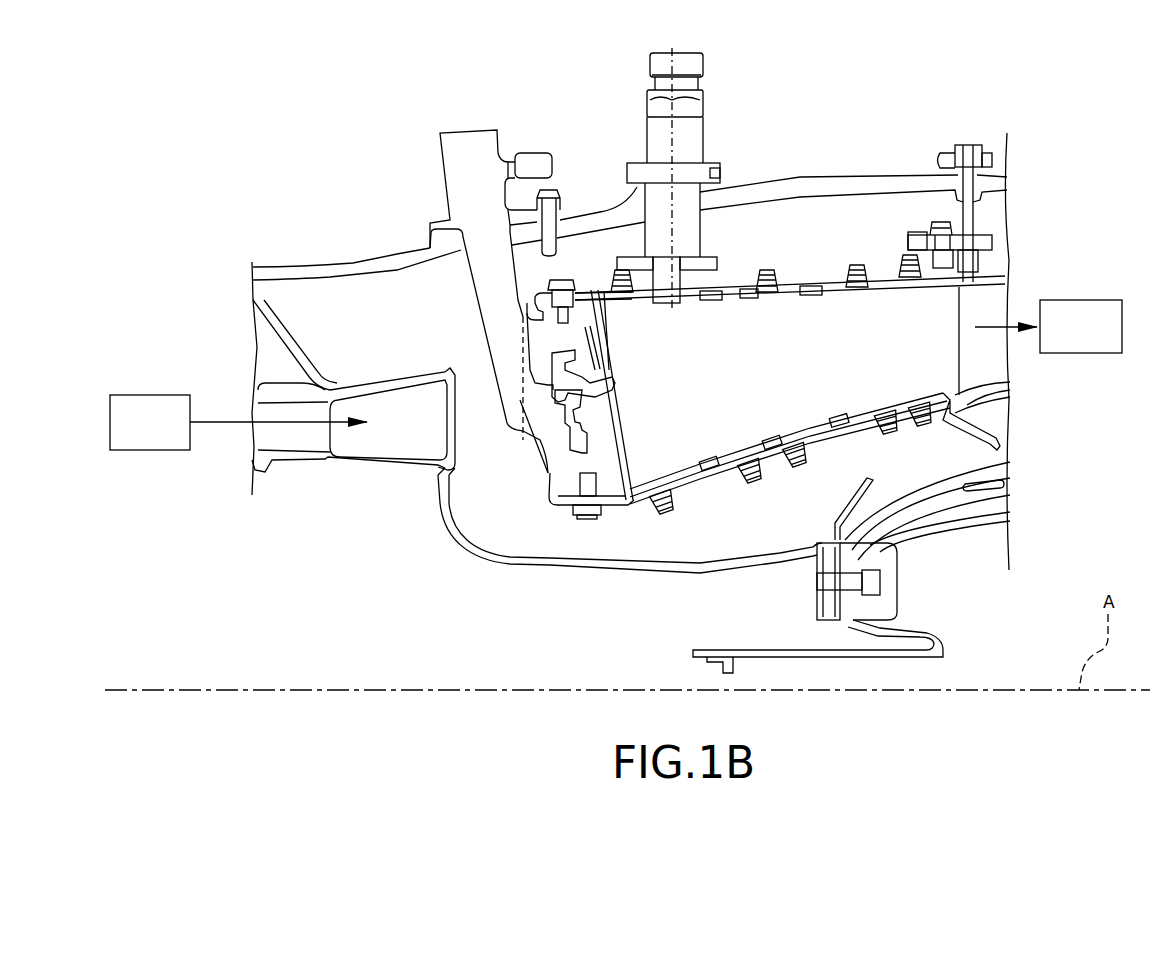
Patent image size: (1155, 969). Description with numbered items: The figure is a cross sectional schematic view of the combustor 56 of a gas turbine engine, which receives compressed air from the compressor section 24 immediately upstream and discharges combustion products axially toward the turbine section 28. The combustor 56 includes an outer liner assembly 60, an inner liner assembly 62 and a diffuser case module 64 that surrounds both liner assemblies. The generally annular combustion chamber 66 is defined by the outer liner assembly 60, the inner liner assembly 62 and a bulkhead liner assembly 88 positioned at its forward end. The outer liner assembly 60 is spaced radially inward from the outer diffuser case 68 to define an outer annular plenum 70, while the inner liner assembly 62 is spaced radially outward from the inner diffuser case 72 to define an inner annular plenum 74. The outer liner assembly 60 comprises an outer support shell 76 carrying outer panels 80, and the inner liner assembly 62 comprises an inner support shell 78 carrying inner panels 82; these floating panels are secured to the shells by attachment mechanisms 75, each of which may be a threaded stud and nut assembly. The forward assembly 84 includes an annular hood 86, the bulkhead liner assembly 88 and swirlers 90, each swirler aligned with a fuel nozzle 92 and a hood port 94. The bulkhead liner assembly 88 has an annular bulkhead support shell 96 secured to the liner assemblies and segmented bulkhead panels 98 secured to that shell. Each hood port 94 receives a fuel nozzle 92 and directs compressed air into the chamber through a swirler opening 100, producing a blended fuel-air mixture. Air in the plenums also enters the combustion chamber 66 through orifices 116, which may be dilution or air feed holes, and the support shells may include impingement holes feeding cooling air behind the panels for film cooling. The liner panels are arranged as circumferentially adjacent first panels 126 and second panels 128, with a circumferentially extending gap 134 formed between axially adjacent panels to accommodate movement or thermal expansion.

The compressor section 24 is at (238, 422).
The turbine section 28 is at (1048, 326).
The combustor 56 is at (910, 110).
The outer liner assembly 60 is at (822, 268).
The inner liner assembly 62 is at (773, 468).
The diffuser case module 64 is at (857, 175).
The combustion chamber 66 is at (885, 341).
The outer diffuser case 68 is at (742, 185).
The outer annular plenum 70 is at (629, 216).
The inner diffuser case 72 is at (600, 572).
The inner annular plenum 74 is at (718, 529).
The attachment mechanisms 75 is at (920, 430).
The outer support shell 76 is at (353, 263).
The inner support shell 78 is at (840, 444).
The outer panels 80 is at (402, 248).
The inner panels 82 is at (703, 467).
The forward assembly 84 is at (540, 514).
The annular hood 86 is at (547, 471).
The bulkhead liner assembly 88 is at (622, 340).
The swirlers 90 is at (617, 424).
The fuel nozzles 92 is at (495, 301).
The hood ports 94 is at (523, 454).
The bulkhead support shell 96 is at (555, 487).
The bulkhead panels 98 is at (620, 458).
The swirler openings 100 is at (610, 395).
The orifices 116 is at (812, 300).
The first panels 126 is at (730, 305).
The second panels 128 is at (838, 292).
The first circumferentially extending gap 134 is at (746, 300).